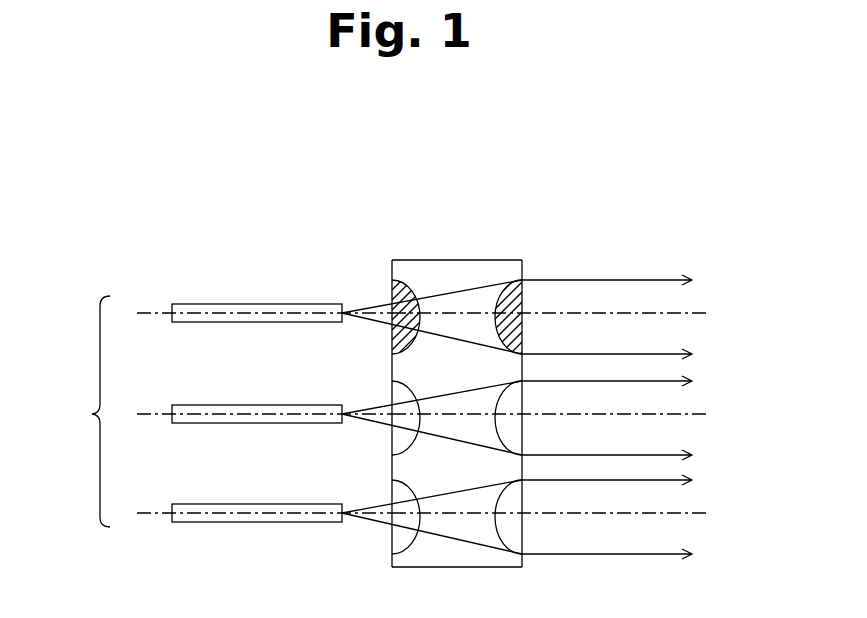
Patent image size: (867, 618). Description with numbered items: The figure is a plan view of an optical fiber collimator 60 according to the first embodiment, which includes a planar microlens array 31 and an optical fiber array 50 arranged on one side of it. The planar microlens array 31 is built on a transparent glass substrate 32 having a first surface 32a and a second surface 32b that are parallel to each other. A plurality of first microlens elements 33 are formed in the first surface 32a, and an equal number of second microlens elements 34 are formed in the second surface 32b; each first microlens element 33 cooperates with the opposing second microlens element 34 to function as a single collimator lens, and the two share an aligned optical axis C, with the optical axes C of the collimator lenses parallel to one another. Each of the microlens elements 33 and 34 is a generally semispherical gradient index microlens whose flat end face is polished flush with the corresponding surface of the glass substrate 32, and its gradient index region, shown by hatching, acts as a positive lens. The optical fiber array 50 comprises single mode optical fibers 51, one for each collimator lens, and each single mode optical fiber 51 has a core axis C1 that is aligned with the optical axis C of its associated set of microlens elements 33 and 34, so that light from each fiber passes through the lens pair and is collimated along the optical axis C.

The planar microlens array 31 is at (497, 230).
The transparent glass substrate 32 is at (455, 408).
The first surface 32a is at (391, 566).
The second surface 32b is at (522, 566).
The first microlens element 33 is at (393, 291).
The second microlens element 34 is at (524, 294).
The optical fiber array 50 is at (92, 414).
The single mode optical fiber 51 is at (258, 303).
The optical fiber collimator 60 is at (382, 219).
The core axis C1 is at (146, 309).
The optical axis C is at (700, 315).